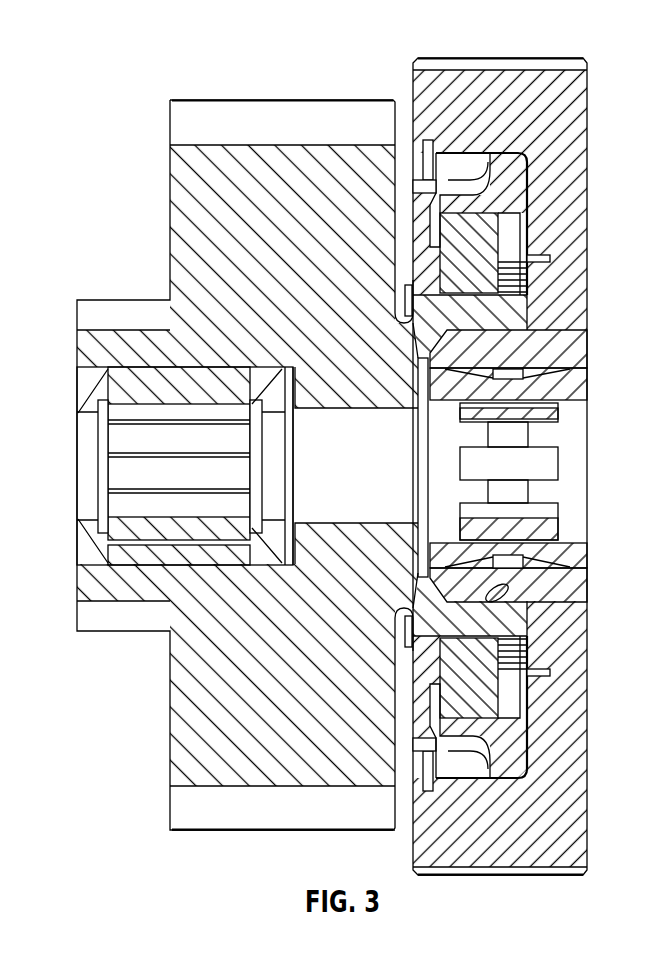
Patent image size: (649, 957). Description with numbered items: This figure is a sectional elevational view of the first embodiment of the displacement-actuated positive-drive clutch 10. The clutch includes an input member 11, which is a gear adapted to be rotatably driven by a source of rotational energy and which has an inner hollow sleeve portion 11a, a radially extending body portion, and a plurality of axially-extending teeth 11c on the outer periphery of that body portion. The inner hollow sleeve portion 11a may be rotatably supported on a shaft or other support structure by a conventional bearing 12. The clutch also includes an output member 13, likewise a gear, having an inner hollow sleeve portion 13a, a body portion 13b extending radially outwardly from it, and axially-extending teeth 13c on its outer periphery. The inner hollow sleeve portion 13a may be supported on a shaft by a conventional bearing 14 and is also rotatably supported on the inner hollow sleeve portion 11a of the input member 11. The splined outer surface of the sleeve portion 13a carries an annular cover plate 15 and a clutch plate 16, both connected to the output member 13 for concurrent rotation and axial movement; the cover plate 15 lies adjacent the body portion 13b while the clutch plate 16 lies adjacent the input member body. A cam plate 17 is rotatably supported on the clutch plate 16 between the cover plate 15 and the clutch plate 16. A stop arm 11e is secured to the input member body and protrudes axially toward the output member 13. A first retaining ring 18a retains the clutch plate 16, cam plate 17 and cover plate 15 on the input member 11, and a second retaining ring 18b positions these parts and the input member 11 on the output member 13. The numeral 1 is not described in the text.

The housing body 1 is at (578, 735).
The displacement-actuated positive-drive clutch 10 is at (78, 82).
The input member 11 is at (500, 43).
The inner hollow sleeve portion 11a is at (485, 578).
The axially-extending teeth 11c is at (535, 873).
The stop arm 11e is at (505, 755).
The bearing 12 is at (530, 388).
The output member 13 is at (283, 96).
The inner hollow sleeve portion 13a is at (487, 317).
The body portion 13b is at (208, 223).
The axially-extending teeth 13c is at (203, 833).
The bearing 14 is at (100, 540).
The cover plate 15 is at (443, 163).
The clutch plate 16 is at (470, 243).
The cam plate 17 is at (512, 182).
The first retaining ring 18a is at (428, 790).
The second retaining ring 18b is at (405, 635).